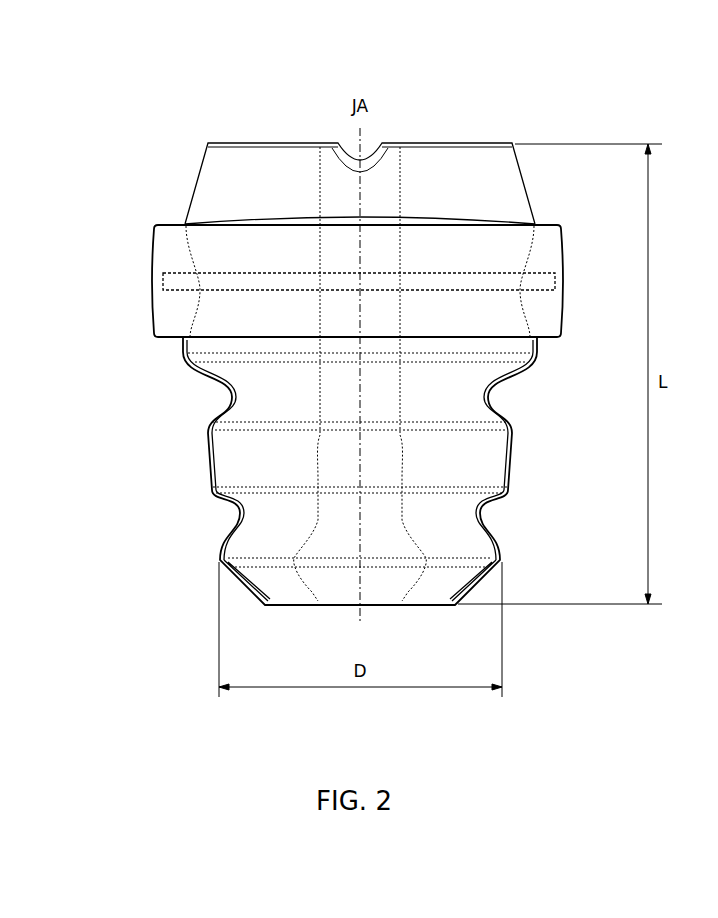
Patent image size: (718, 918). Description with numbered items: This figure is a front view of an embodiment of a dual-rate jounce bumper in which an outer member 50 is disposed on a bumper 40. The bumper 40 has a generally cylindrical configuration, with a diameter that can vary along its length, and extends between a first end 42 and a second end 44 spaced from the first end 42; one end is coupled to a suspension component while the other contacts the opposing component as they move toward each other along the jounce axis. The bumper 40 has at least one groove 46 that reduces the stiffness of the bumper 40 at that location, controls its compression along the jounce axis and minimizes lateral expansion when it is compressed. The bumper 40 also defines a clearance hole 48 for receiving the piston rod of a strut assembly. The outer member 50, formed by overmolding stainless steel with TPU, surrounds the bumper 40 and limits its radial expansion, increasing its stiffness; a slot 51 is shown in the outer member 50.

The first end 42 is at (194, 152).
The outer member 50 is at (553, 245).
The slot 51 is at (543, 292).
The bumper 40 is at (196, 490).
The groove 46 is at (504, 407).
The second end 44 is at (514, 597).
The clearance hole 48 is at (442, 615).